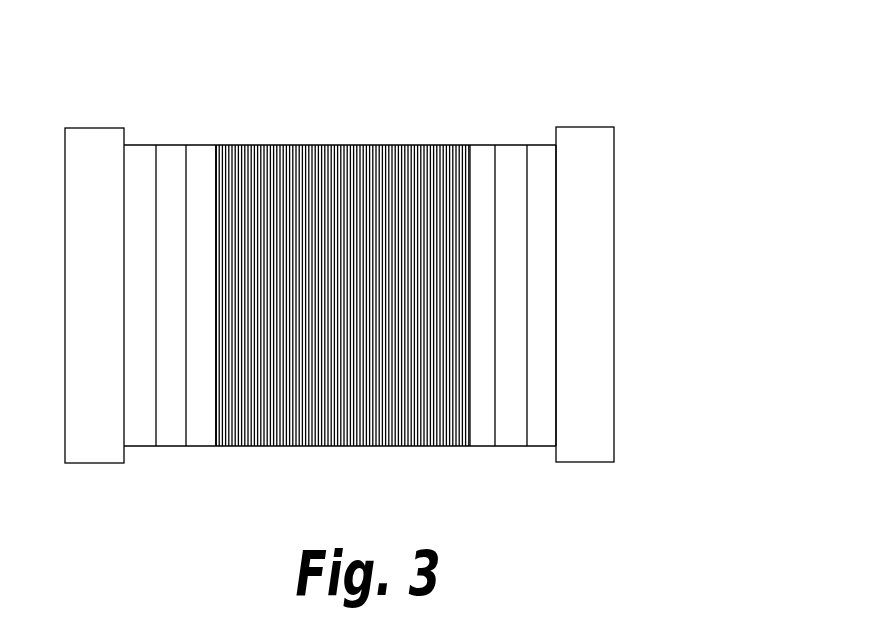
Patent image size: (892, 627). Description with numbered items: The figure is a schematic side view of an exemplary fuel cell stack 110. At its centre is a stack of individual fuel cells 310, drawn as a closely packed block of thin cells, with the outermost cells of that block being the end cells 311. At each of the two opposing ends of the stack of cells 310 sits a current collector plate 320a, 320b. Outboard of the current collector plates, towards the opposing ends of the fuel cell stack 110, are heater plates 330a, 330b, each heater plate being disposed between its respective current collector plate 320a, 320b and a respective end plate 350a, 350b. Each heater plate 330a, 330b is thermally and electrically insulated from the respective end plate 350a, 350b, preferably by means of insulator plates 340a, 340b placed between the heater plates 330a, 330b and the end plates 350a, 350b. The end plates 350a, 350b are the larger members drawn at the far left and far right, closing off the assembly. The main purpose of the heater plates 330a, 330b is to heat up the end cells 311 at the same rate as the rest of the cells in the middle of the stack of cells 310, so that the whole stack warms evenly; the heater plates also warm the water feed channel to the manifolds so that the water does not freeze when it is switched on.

The fuel cell stack 110 is at (375, 274).
The stack of individual fuel cells 310 is at (213, 145).
The end cells 311 is at (216, 446).
The current collector plate 320a is at (205, 152).
The current collector plate 320b is at (484, 153).
The heater plate 330a is at (168, 447).
The heater plate 330b is at (515, 447).
The insulator plate 340a is at (145, 154).
The insulator plate 340b is at (539, 162).
The end plate 350a is at (120, 328).
The end plate 350b is at (560, 352).